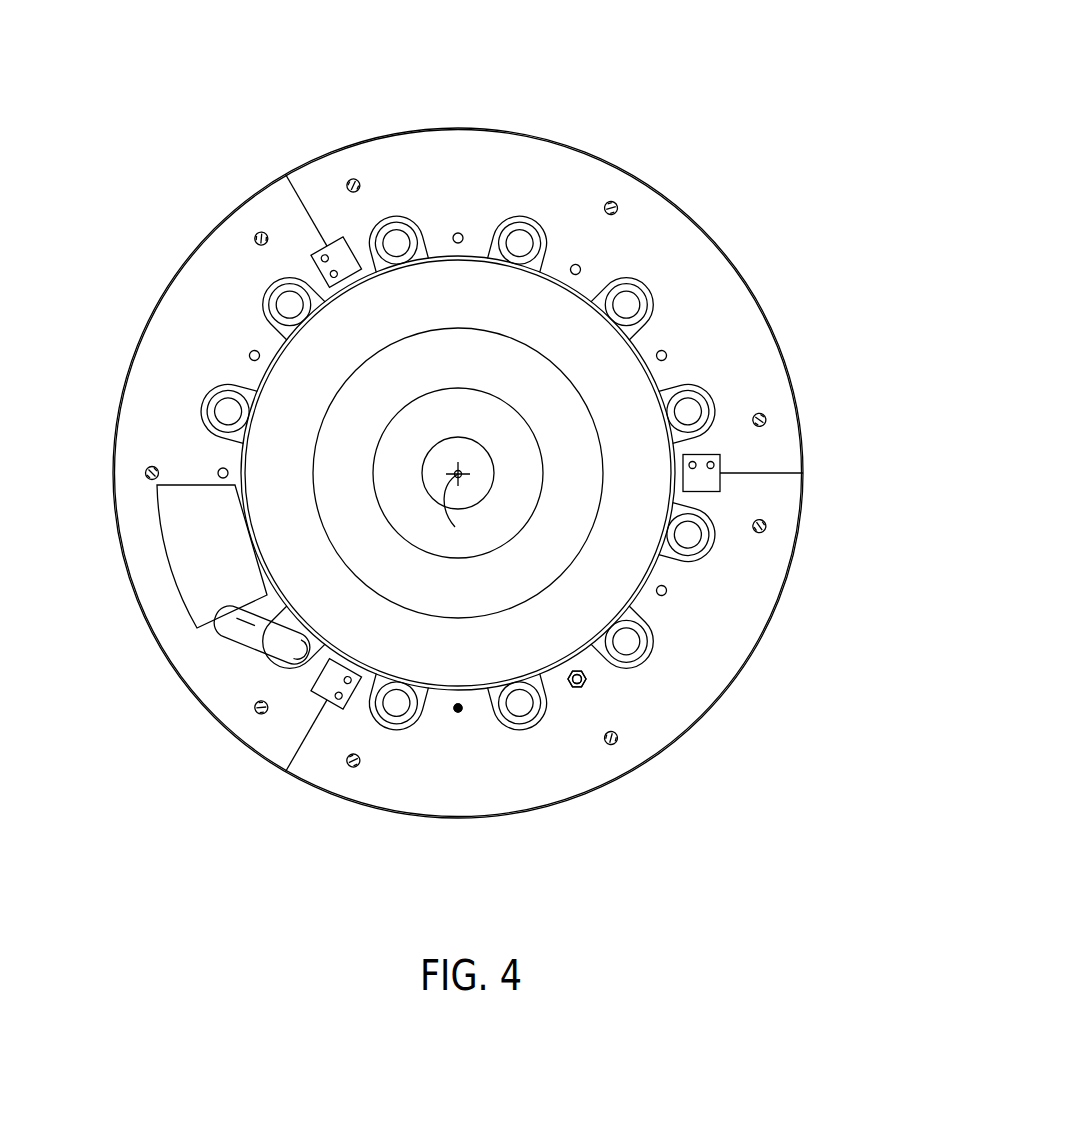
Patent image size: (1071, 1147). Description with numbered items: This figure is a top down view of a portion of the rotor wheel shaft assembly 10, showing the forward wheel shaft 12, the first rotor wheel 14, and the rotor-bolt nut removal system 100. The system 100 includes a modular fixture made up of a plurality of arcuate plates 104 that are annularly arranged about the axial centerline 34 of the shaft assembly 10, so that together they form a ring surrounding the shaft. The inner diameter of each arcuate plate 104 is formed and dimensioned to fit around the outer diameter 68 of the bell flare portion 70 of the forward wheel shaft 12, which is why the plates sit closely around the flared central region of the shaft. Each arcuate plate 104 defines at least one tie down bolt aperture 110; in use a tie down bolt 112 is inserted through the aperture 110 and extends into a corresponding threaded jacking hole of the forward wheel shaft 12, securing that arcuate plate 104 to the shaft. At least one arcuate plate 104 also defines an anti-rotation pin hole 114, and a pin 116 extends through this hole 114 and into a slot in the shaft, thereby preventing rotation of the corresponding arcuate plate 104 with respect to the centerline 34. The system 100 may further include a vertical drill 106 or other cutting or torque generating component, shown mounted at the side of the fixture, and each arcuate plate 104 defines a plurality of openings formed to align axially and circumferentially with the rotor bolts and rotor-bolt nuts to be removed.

The shaft assembly 10 is at (644, 62).
The forward wheel shaft 12 is at (555, 428).
The first rotor wheel 14 is at (374, 132).
The axial centerline 34 is at (458, 474).
The outer diameter 68 is at (477, 268).
The bell flare portion 70 is at (637, 403).
The rotor-bolt nut removal system 100 is at (171, 245).
The arcuate plate 104 is at (605, 193).
The vertical drill 106 is at (163, 569).
The tie down bolt aperture 110 is at (587, 689).
The tie down bolt 112 is at (586, 677).
The anti-rotation pin hole 114 is at (465, 716).
The pin 116 is at (454, 713).